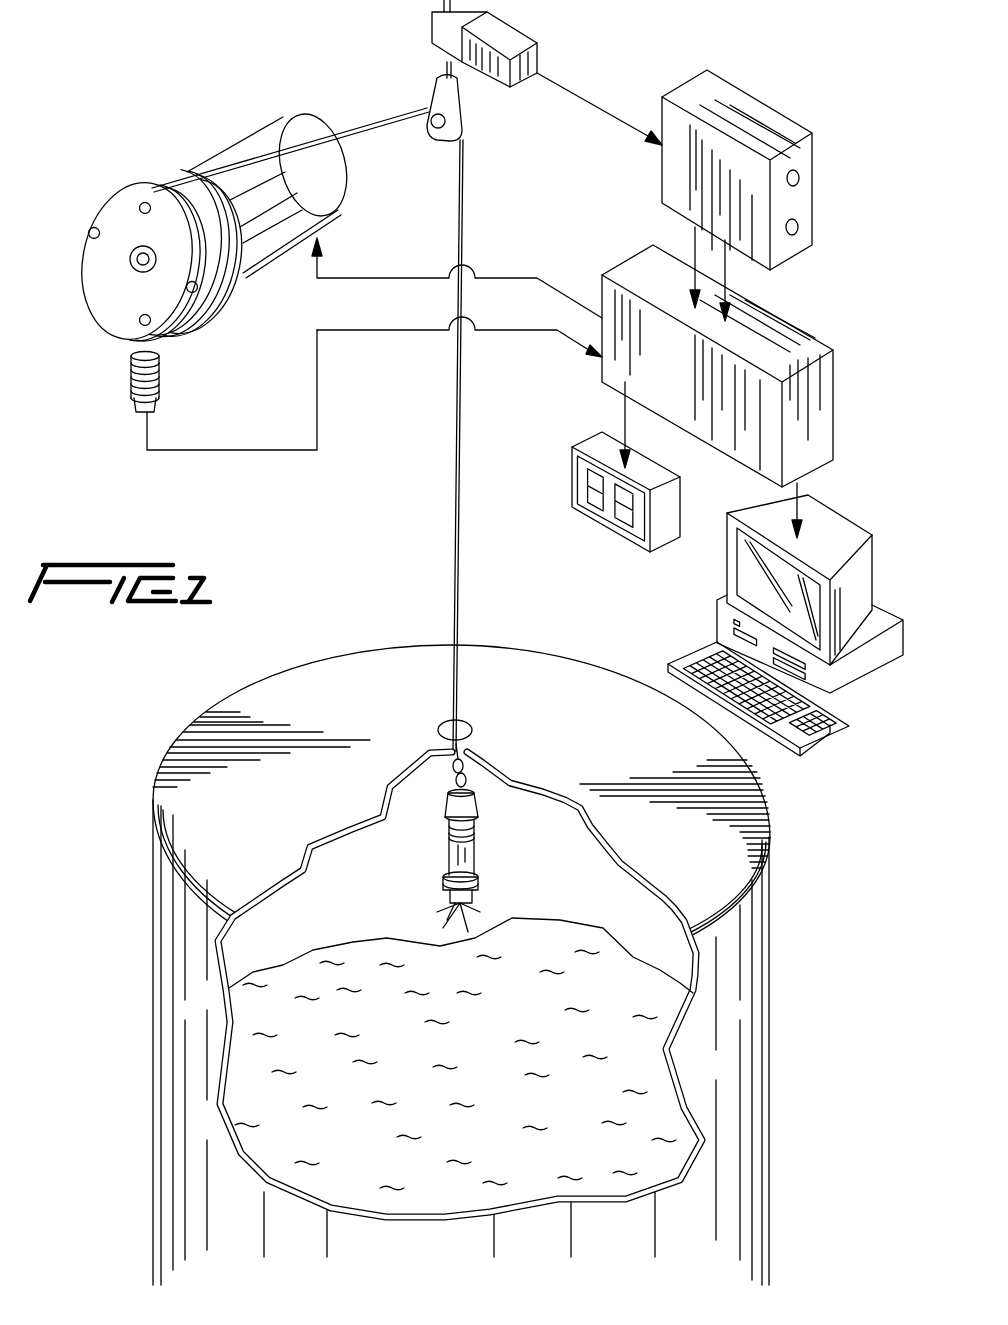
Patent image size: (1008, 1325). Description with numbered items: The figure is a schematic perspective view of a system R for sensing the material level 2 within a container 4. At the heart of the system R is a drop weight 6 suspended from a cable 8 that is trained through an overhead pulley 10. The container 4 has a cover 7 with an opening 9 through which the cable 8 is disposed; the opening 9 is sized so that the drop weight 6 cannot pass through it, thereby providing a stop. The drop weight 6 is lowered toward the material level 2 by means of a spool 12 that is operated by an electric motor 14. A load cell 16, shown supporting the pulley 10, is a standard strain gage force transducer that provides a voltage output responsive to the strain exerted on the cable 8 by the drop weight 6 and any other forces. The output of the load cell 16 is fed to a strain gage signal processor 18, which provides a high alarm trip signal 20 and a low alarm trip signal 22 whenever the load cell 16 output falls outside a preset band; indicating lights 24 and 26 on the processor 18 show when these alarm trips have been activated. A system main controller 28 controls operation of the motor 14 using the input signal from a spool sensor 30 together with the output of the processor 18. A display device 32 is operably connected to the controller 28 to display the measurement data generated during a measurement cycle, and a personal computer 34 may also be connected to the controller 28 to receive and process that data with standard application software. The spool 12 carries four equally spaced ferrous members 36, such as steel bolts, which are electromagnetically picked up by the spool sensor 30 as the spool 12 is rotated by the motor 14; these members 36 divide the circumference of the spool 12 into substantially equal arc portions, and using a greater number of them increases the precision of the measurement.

The system R is at (259, 68).
The material level 2 is at (592, 925).
The container 4 is at (153, 972).
The drop weight 6 is at (430, 852).
The cover 7 is at (341, 660).
The cable 8 is at (455, 549).
The opening 9 is at (470, 727).
The overhead pulley 10 is at (430, 97).
The spool 12 is at (110, 193).
The electric motor 14 is at (337, 223).
The load cell 16 is at (510, 33).
The strain gage signal processor 18 is at (737, 100).
The high alarm trip signal 20 is at (693, 247).
The low alarm trip signal 22 is at (728, 267).
The indicating light 24 is at (800, 173).
The indicating light 26 is at (798, 227).
The system main controller 28 is at (828, 400).
The spool sensor 30 is at (131, 397).
The display device 32 is at (572, 490).
The personal computer 34 is at (718, 583).
The ferrous members 36 is at (188, 330).